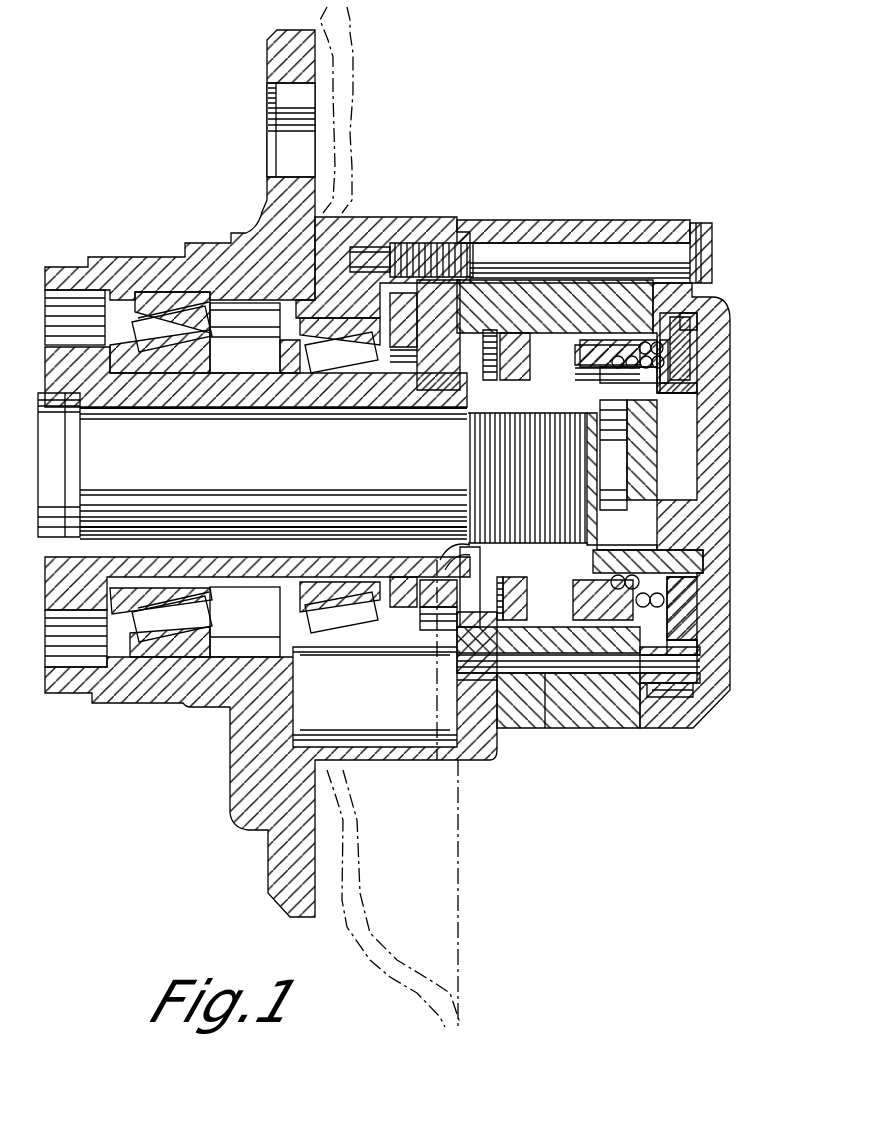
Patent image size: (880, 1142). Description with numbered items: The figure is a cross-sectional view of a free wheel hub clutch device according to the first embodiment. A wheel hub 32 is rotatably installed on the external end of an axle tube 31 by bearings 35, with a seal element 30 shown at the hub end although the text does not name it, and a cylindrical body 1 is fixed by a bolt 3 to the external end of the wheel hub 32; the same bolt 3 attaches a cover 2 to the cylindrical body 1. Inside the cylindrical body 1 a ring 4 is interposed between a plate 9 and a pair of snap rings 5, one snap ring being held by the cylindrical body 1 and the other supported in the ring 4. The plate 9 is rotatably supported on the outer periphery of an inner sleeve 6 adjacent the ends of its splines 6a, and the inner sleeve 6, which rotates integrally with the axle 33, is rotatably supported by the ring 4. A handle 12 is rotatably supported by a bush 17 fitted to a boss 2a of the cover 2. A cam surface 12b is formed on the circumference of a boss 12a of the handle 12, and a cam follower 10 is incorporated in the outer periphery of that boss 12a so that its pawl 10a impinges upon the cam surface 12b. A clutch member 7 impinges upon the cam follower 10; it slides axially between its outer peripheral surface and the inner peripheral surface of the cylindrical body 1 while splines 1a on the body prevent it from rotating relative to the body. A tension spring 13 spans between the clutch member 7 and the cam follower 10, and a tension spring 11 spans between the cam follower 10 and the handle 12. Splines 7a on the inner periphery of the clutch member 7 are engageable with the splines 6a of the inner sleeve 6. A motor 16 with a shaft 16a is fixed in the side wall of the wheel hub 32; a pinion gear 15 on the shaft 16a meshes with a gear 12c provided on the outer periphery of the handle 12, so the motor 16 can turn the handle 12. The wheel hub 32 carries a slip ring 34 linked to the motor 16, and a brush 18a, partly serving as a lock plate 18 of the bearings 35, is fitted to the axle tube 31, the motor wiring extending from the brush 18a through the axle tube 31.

The cylindrical body 1 is at (477, 228).
The splines 1a is at (585, 665).
The cover 2 is at (722, 415).
The boss 2a is at (660, 460).
The bolt 3 is at (645, 245).
The ring 4 is at (520, 278).
The snap rings 5 is at (492, 278).
The inner sleeve 6 is at (505, 640).
The splines 6a is at (555, 625).
The clutch member 7 is at (620, 675).
The splines 7a is at (655, 493).
The plate 9 is at (552, 278).
The cam follower 10 is at (665, 355).
The pawl 10a is at (690, 720).
The tension spring 11 is at (650, 600).
The handle 12 is at (690, 620).
The boss 12a is at (665, 400).
The cam surface 12b is at (605, 383).
The gear 12c is at (665, 655).
The tension spring 13 is at (690, 600).
The pinion gear 15 is at (660, 680).
The motor 16 is at (372, 640).
The shaft 16a is at (600, 660).
The bush 17 is at (625, 555).
The lock plate 18 is at (410, 255).
The brush 18a is at (430, 600).
The seal 30 is at (140, 300).
The axle tube 31 is at (195, 385).
The wheel hub 32 is at (250, 240).
The axle 33 is at (270, 517).
The slip ring 34 is at (437, 590).
The bearings 35 is at (265, 700).